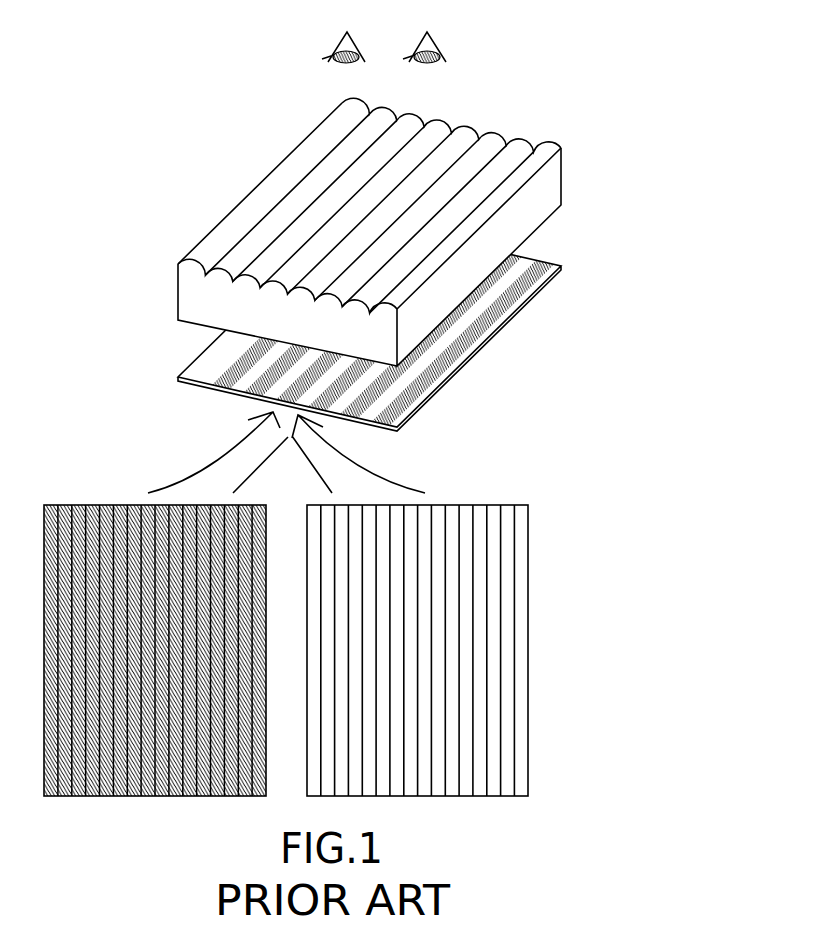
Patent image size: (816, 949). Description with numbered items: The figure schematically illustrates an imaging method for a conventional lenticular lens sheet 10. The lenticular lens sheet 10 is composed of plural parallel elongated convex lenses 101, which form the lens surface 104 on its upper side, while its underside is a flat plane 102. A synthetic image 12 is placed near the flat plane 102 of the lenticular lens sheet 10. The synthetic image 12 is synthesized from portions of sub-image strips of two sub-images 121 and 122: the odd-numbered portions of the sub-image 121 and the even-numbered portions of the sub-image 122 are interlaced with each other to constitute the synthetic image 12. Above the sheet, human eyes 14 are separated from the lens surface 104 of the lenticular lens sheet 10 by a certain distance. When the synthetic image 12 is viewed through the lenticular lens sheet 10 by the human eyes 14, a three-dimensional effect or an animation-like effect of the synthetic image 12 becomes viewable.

The lenticular lens sheet 10 is at (371, 220).
The synthetic image 12 is at (523, 305).
The human eyes 14 is at (442, 36).
The elongated convex lenses 101 is at (550, 187).
The flat plane 102 is at (192, 323).
The lens surface 104 is at (298, 160).
The sub-image 121 is at (120, 490).
The sub-image 122 is at (453, 495).